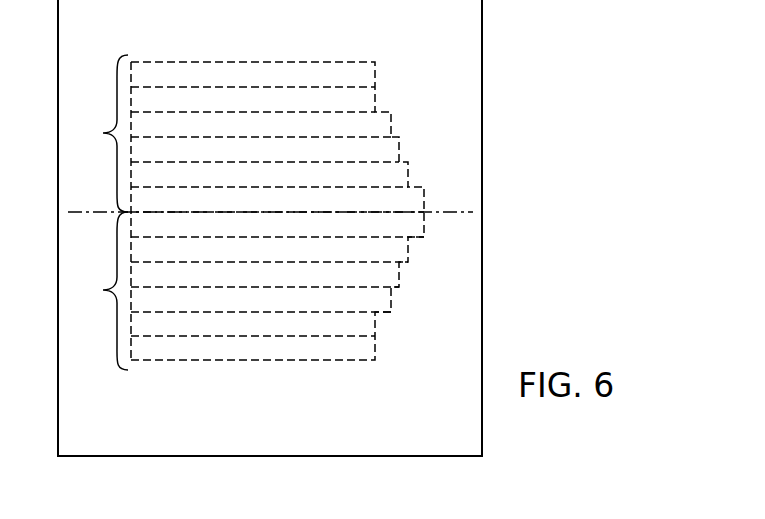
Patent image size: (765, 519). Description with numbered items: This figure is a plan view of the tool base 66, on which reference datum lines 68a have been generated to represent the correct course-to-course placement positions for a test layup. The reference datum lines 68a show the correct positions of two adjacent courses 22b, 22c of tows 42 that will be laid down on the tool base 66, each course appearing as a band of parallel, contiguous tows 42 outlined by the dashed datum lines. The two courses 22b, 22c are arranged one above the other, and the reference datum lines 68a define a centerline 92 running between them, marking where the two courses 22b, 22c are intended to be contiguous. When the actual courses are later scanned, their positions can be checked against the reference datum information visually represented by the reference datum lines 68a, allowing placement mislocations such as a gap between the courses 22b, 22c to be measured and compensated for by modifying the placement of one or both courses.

The tool base 66 is at (270, 456).
The centerline 92 is at (467, 224).
The reference datum lines 68a is at (386, 91).
The tows 42 is at (215, 153).
The course 22b is at (96, 133).
The course 22c is at (97, 291).